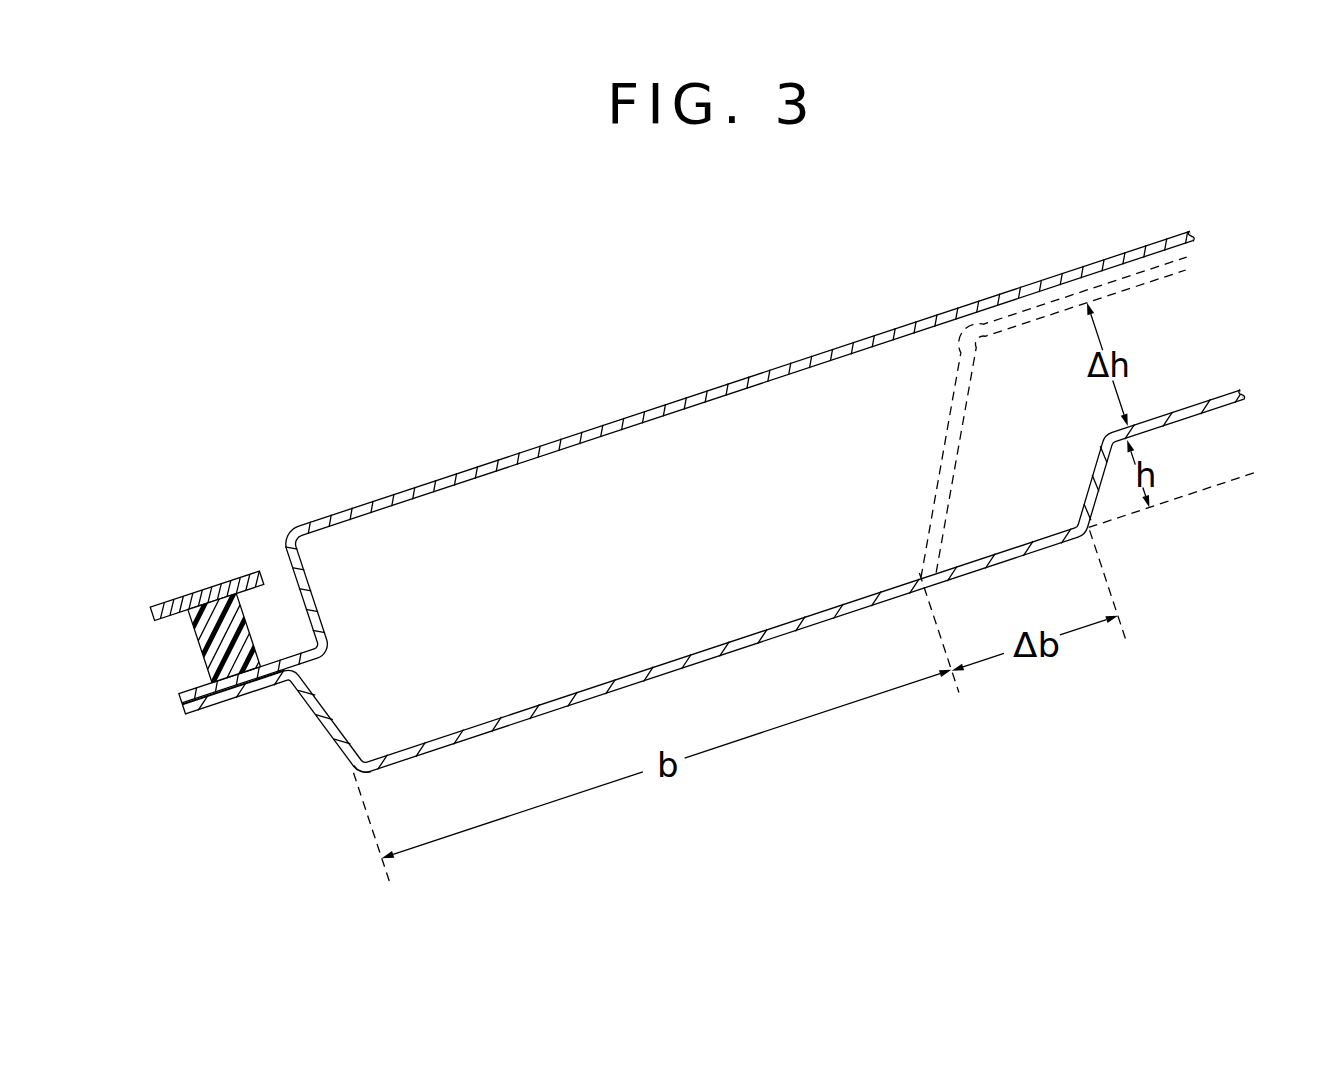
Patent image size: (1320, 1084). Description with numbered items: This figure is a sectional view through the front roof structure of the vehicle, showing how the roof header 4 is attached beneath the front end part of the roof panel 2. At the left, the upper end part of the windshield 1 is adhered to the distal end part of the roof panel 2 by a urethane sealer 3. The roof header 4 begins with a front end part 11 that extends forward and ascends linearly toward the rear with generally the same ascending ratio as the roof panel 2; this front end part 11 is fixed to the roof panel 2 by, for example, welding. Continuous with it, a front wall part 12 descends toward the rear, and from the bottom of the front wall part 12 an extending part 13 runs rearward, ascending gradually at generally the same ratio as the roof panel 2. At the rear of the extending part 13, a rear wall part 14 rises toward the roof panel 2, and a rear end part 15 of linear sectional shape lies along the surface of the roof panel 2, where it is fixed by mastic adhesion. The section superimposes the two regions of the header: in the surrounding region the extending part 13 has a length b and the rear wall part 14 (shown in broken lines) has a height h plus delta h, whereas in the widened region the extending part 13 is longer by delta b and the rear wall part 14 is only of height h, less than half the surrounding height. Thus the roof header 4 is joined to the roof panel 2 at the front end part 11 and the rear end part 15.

The windshield 1 is at (212, 586).
The roof panel 2 is at (667, 397).
The urethane sealer 3 is at (192, 648).
The roof header 4 is at (340, 764).
The front end part 11 is at (224, 698).
The front wall part 12 is at (317, 720).
The extending part 13 is at (682, 668).
The rear wall part 14 is at (944, 420).
The rear end part 15 is at (1016, 312).